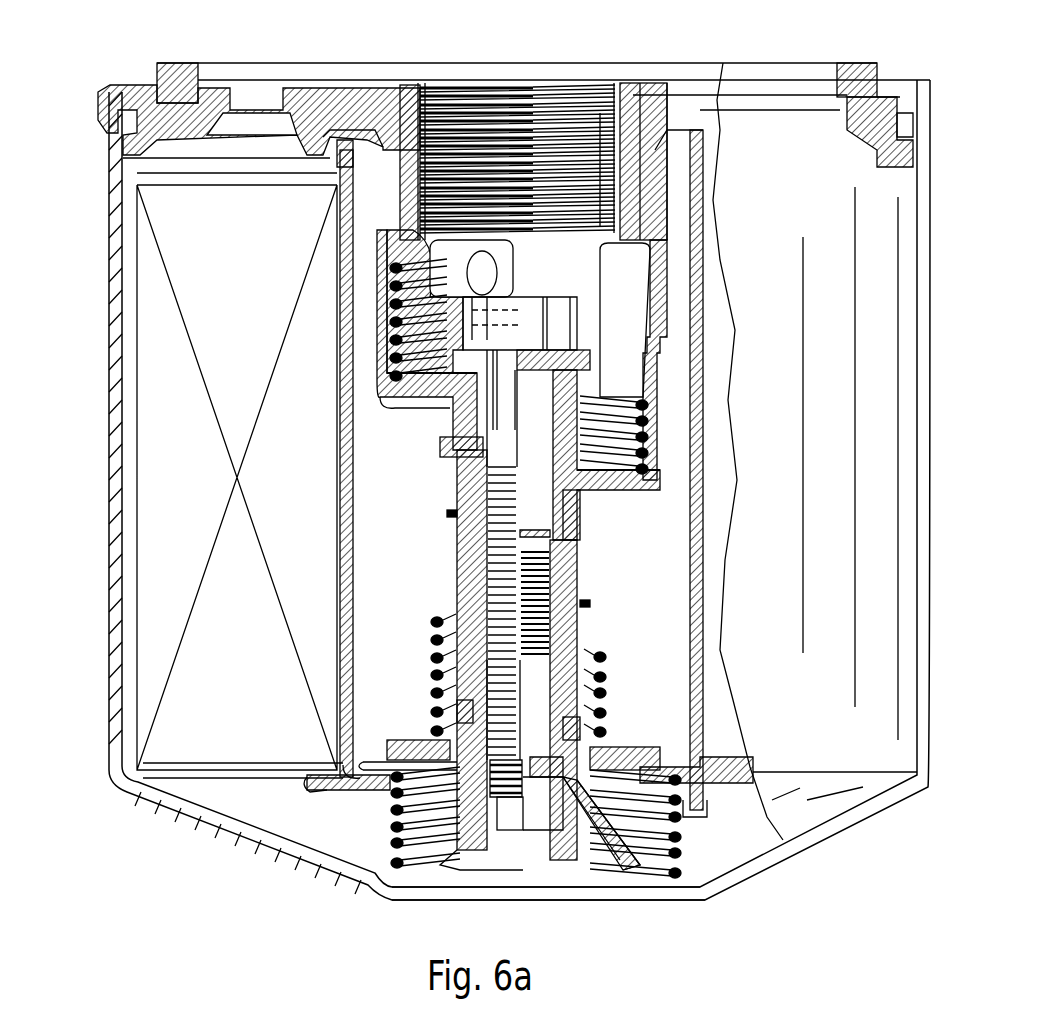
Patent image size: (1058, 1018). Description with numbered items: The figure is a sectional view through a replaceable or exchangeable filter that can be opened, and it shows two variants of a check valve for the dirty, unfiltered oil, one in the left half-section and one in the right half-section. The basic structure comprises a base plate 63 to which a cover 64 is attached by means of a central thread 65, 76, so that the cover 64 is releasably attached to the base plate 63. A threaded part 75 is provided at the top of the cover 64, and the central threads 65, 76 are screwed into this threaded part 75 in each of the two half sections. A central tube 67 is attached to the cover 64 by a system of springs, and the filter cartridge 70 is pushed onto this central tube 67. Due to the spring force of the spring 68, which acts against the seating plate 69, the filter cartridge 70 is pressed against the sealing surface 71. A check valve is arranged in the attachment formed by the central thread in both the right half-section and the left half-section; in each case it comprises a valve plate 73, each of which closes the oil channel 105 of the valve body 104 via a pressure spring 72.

The base plate 63 is at (633, 100).
The cover 64 is at (740, 853).
The central thread 65 is at (565, 240).
The central tube 67 is at (343, 705).
The spring 68 is at (390, 815).
The seating plate 69 is at (322, 790).
The filter cartridge 70 is at (718, 660).
The sealing surface 71 is at (303, 168).
The pressure spring 72 is at (385, 305).
The valve plate 73 is at (382, 382).
The threaded part 75 is at (540, 797).
The central thread 76 is at (432, 700).
The valve body 104 is at (385, 345).
The oil channel 105 is at (440, 415).